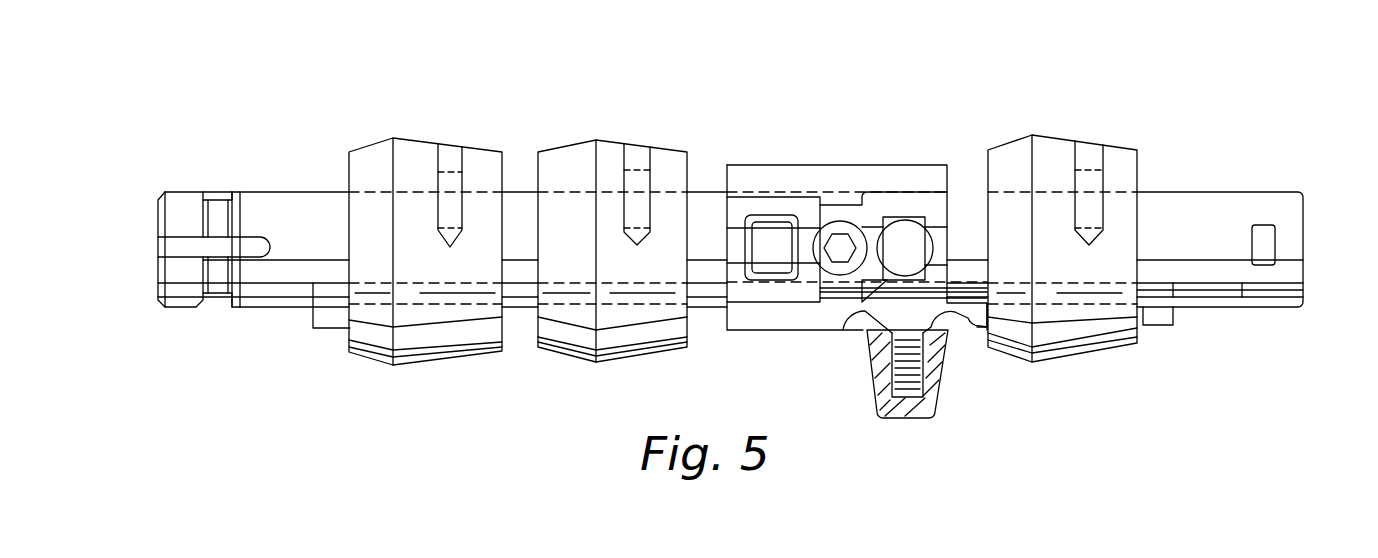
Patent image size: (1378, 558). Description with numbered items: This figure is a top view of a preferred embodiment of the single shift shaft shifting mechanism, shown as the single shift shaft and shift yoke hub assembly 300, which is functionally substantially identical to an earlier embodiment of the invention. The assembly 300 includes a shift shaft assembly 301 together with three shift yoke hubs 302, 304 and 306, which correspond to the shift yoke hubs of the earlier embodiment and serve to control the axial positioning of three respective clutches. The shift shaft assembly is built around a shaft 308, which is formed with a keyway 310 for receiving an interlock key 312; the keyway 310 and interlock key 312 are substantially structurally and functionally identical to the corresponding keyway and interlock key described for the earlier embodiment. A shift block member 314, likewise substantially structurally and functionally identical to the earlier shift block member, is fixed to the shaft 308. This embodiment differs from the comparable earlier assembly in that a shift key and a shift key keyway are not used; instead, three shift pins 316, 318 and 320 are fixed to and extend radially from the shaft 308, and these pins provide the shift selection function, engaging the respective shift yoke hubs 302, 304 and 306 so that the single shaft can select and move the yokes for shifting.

The single shift shaft and shift yoke hub assembly 300 is at (1040, 108).
The shift shaft assembly 301 is at (1265, 152).
The shift yoke hub 302 is at (412, 336).
The shift yoke hub 304 is at (623, 340).
The shift yoke hub 306 is at (1113, 335).
The shaft 308 is at (1273, 206).
The keyway 310 is at (1242, 307).
The interlock key 312 is at (325, 320).
The shift block member 314 is at (819, 182).
The shift pin 316 is at (455, 186).
The shift pin 318 is at (645, 187).
The shift pin 320 is at (1099, 180).